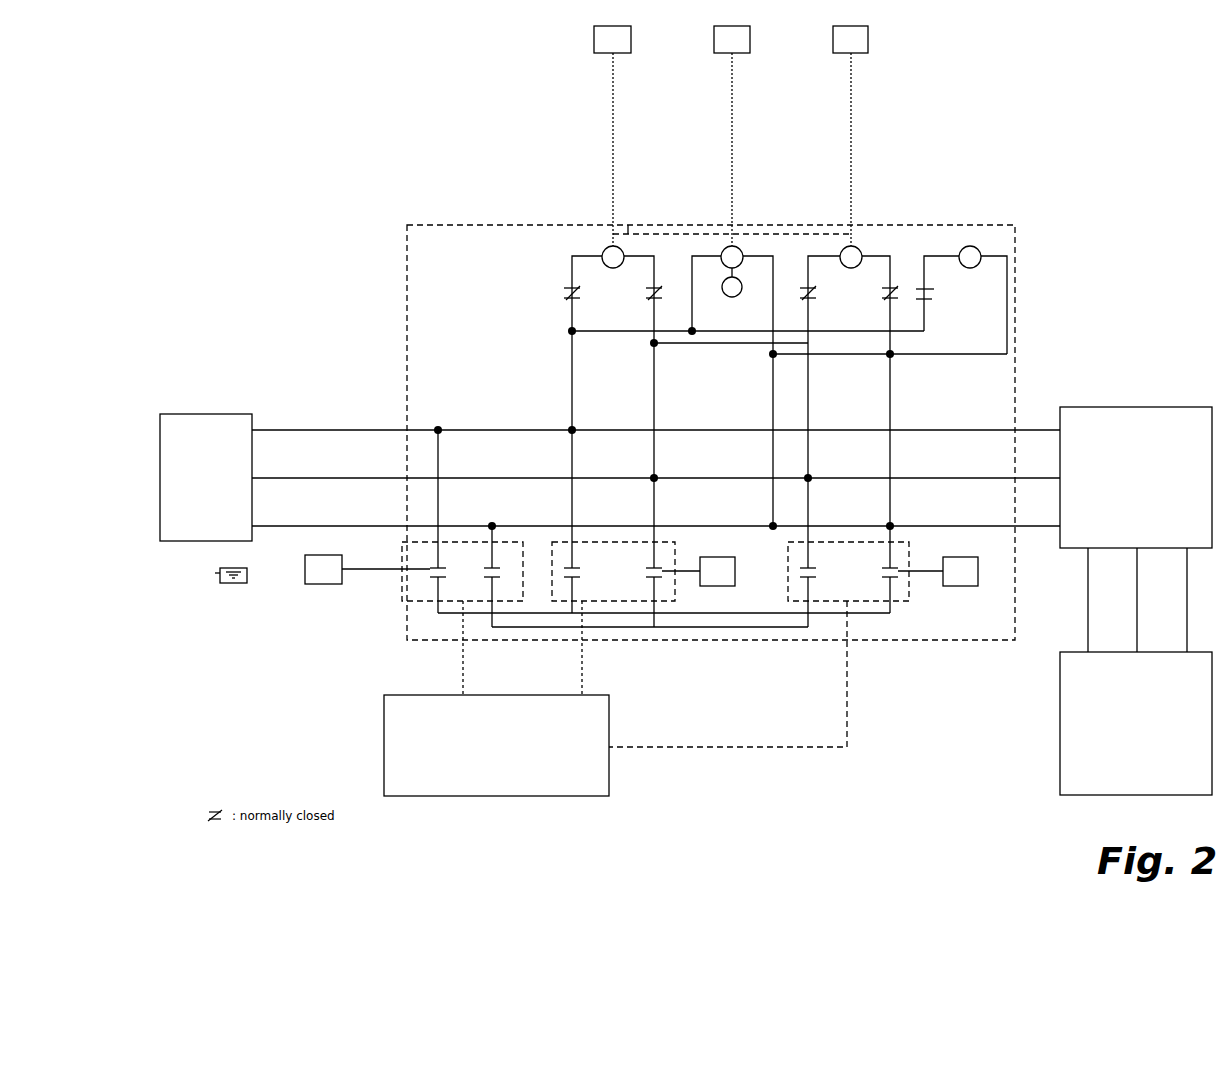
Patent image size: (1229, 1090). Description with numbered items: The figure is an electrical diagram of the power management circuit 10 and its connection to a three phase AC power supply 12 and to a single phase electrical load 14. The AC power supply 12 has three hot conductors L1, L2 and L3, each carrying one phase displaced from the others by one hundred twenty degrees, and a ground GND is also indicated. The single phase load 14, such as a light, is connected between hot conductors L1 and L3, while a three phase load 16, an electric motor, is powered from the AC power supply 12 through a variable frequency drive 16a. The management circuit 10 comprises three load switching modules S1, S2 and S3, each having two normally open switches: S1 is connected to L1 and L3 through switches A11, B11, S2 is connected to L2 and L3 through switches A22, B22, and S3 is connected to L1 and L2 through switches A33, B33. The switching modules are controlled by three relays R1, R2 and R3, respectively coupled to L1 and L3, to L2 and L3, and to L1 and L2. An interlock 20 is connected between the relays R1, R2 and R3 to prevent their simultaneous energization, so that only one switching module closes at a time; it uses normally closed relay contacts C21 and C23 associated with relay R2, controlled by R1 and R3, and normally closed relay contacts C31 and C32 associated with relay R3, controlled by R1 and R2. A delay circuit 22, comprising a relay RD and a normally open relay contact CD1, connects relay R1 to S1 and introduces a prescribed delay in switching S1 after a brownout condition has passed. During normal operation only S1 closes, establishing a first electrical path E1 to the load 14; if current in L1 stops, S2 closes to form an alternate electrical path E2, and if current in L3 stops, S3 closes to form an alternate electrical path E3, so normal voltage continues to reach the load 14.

The power management circuit 10 is at (397, 658).
The AC power supply 12 is at (188, 488).
The single phase electrical load 14 is at (478, 755).
The three phase electrical load 16 is at (1119, 740).
The variable frequency drive 16a is at (1115, 491).
The interlock 20 is at (629, 234).
The delay circuit 22 is at (1015, 290).
The load switching module S1 is at (401, 578).
The load switching module S2 is at (909, 590).
The load switching module S3 is at (675, 580).
The relay R1 is at (721, 249).
The relay R2 is at (841, 249).
The relay R3 is at (604, 249).
The relay RD is at (966, 247).
The normally open relay contact CD1 is at (933, 289).
The normally closed relay contact C31 is at (572, 284).
The normally closed relay contact C32 is at (654, 284).
The normally closed relay contact C23 is at (808, 284).
The normally closed relay contact C21 is at (893, 284).
The hot conductor L1 is at (656, 421).
The hot conductor L2 is at (656, 469).
The hot conductor L3 is at (656, 517).
The first electrical path E1 is at (475, 648).
The alternate electrical path E2 is at (741, 674).
The alternate electrical path E3 is at (594, 648).
The ground GND is at (215, 575).
The normally open switch A11 is at (440, 581).
The normally open switch B11 is at (494, 588).
The normally open switch A33 is at (575, 581).
The normally open switch B33 is at (656, 588).
The normally open switch A22 is at (810, 588).
The normally open switch B22 is at (892, 581).